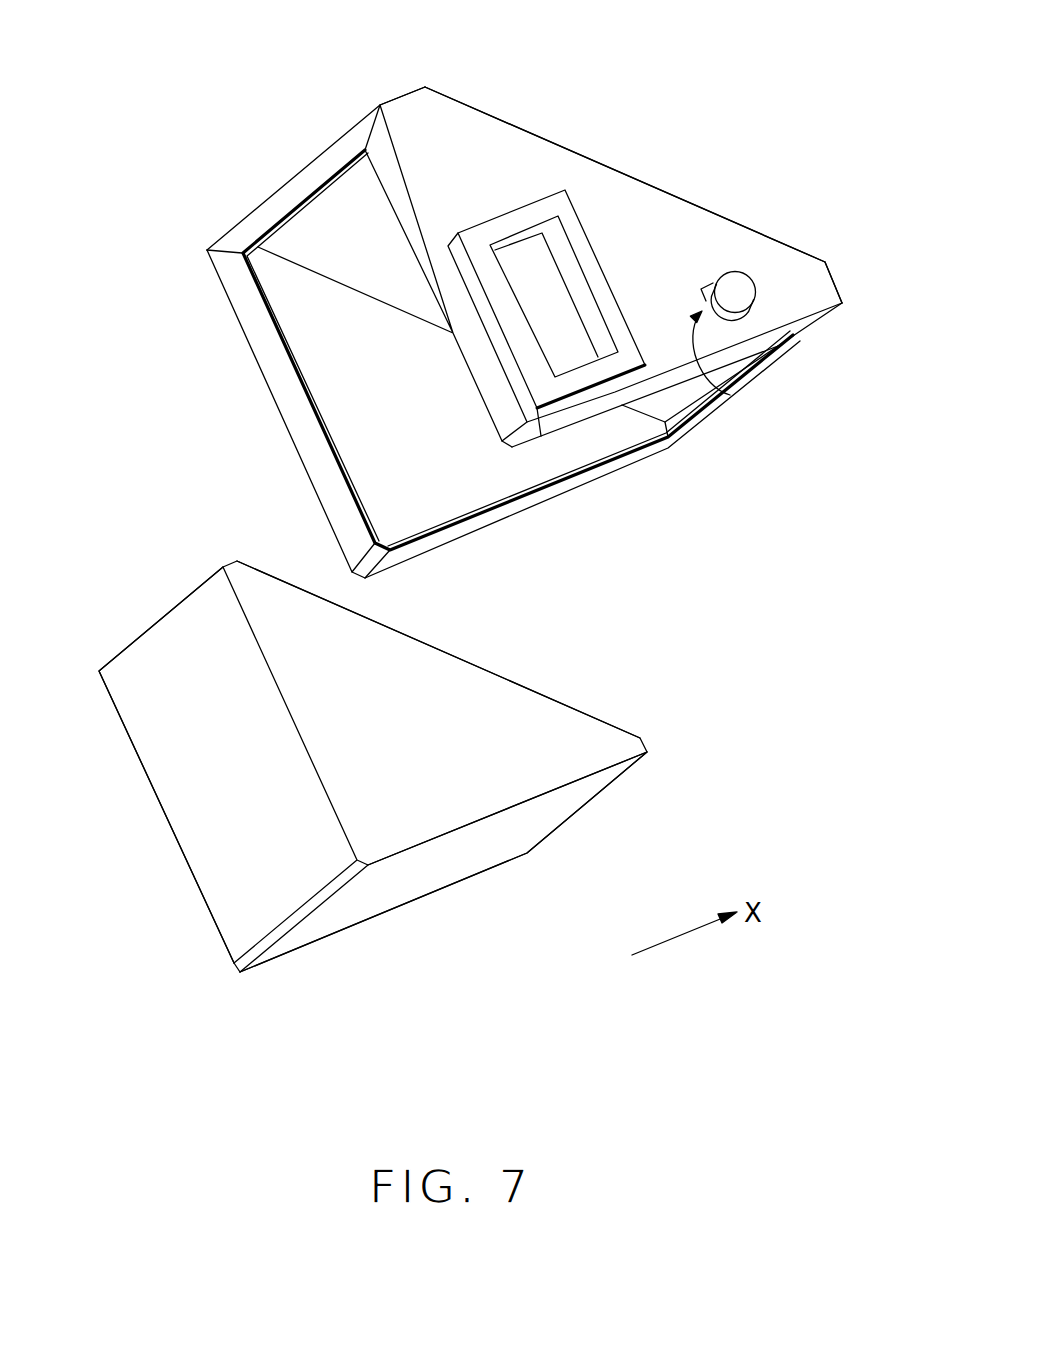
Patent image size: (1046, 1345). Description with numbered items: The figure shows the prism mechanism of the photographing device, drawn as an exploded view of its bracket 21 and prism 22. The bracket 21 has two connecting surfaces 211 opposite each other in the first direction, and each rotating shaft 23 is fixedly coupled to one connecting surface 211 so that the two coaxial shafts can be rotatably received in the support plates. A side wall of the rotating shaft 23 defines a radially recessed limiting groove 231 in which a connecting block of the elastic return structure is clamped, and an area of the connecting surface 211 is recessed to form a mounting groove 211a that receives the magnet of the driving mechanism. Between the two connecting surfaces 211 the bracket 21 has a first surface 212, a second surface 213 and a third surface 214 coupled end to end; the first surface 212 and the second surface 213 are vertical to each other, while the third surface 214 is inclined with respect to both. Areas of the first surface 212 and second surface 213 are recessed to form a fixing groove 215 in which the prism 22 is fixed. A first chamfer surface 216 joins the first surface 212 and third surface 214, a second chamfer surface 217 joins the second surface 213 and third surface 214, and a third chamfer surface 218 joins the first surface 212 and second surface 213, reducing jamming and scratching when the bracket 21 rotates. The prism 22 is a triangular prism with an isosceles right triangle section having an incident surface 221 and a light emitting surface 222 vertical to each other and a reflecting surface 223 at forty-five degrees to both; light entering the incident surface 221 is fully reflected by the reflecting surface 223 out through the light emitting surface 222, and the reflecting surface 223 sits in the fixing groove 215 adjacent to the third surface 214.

The bracket 21 is at (782, 240).
The connecting surface 211 is at (707, 238).
The mounting groove 211a is at (522, 253).
The first surface 212 is at (392, 163).
The second surface 213 is at (672, 378).
The third surface 214 is at (625, 170).
The fixing groove 215 is at (318, 230).
The first chamfer surface 216 is at (402, 88).
The second chamfer surface 217 is at (837, 283).
The third chamfer surface 218 is at (522, 433).
The rotating shaft 23 is at (742, 298).
The limiting groove 231 is at (730, 395).
The prism 22 is at (565, 758).
The incident surface 221 is at (205, 837).
The light emitting surface 222 is at (448, 870).
The reflecting surface 223 is at (572, 705).